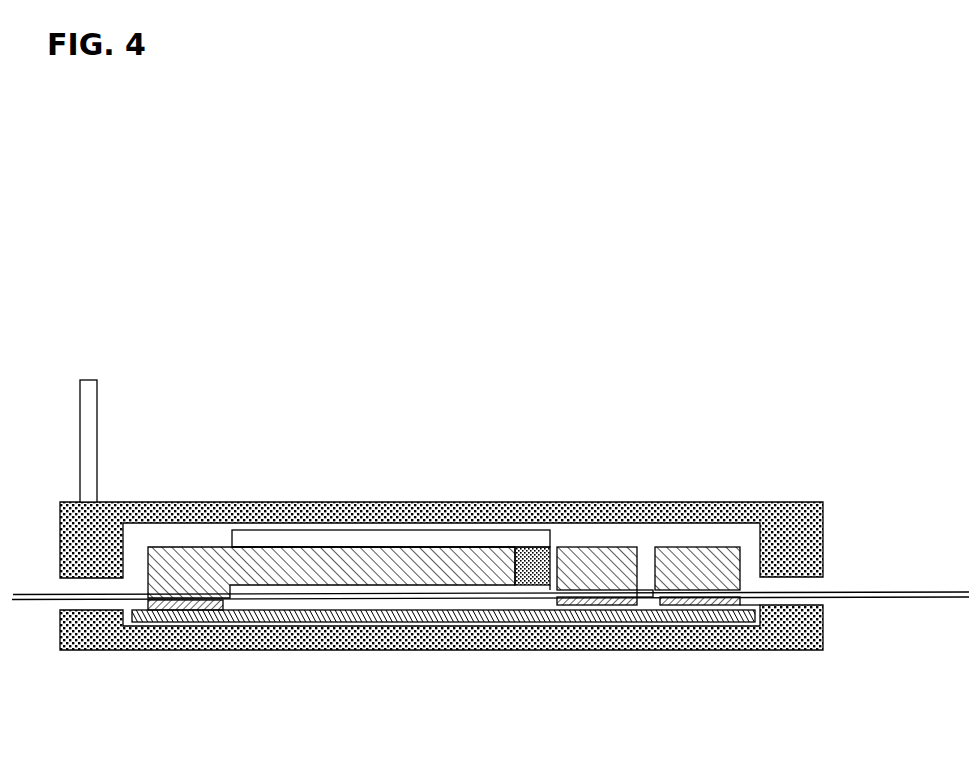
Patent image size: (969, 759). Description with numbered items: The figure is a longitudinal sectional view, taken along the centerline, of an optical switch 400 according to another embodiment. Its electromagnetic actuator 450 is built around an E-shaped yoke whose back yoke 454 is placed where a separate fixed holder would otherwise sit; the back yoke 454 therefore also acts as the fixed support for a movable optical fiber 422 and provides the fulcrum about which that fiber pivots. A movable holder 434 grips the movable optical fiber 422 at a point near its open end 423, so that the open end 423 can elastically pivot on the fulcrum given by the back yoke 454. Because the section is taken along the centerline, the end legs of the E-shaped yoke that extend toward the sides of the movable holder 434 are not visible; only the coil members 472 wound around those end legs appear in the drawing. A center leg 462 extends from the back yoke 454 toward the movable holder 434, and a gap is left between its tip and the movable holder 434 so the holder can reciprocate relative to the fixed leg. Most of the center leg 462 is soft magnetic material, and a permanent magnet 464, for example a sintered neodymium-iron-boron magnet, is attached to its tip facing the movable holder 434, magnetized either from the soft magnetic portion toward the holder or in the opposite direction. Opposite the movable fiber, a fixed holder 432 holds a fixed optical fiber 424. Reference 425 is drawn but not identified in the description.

The optical switch 400 is at (116, 269).
The movable optical fiber 422 is at (22, 603).
The open end 423 is at (642, 590).
The fixed optical fiber 424 is at (843, 592).
The bonding layer 425 is at (655, 587).
The fixed holder 432 is at (727, 547).
The movable holder 434 is at (617, 545).
The electromagnetic actuator 450 is at (645, 648).
The back yoke 454 is at (205, 558).
The center leg 462 is at (370, 545).
The permanent magnet 464 is at (550, 545).
The coil member 472 is at (450, 533).